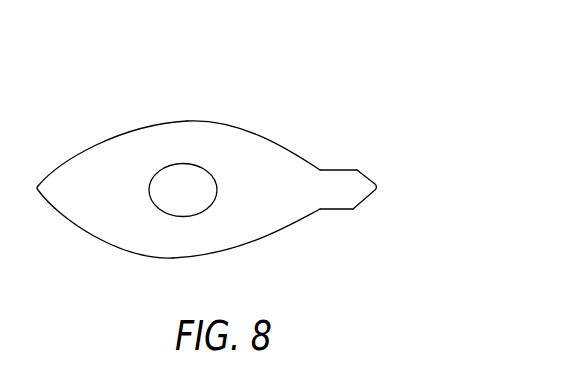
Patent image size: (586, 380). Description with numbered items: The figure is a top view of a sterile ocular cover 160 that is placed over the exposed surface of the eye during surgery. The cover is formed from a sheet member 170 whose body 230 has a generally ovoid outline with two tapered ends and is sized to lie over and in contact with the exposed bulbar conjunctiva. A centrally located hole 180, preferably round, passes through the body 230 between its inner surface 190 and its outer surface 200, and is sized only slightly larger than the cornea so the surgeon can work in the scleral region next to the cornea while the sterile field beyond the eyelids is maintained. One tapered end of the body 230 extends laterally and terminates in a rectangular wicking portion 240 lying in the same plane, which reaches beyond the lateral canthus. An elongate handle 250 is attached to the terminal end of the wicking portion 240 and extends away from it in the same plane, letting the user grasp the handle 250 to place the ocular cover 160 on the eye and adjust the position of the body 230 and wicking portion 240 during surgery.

The sterile ocular cover 160 is at (231, 175).
The sheet member 170 is at (208, 138).
The hole 180 is at (165, 183).
The inner surface 190 is at (98, 208).
The outer surface 200 is at (82, 183).
The body 230 is at (190, 248).
The wicking portion 240 is at (340, 190).
The handle 250 is at (377, 183).